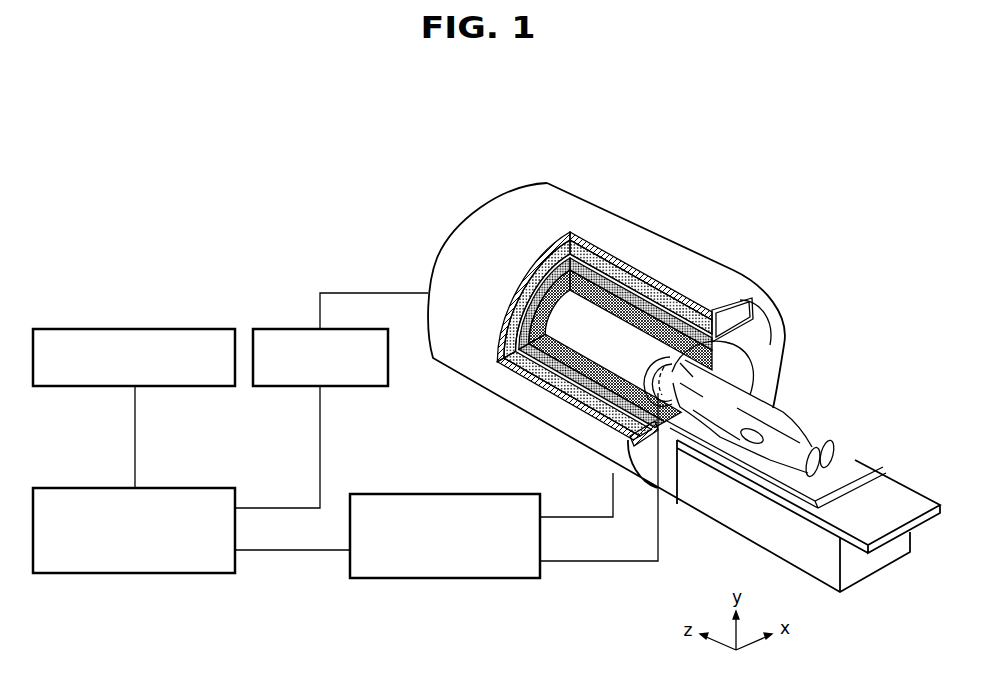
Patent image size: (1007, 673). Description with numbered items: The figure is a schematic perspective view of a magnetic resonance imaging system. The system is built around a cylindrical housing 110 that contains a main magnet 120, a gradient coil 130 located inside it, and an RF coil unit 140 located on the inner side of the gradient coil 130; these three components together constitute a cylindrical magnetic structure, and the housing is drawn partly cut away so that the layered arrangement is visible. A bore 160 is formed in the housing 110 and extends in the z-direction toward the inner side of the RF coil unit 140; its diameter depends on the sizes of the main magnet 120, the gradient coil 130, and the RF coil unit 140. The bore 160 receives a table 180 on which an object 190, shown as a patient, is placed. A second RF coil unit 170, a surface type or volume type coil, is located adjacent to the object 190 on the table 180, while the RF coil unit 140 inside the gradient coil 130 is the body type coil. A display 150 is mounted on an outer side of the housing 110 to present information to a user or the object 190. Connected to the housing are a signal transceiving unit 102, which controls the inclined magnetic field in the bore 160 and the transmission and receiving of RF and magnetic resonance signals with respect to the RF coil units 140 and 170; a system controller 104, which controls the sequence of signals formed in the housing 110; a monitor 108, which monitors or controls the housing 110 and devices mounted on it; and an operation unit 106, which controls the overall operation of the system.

The signal transceiving unit 102 is at (446, 494).
The system controller 104 is at (172, 488).
The operation unit 106 is at (172, 329).
The monitor 108 is at (293, 329).
The housing 110 is at (553, 202).
The main magnet 120 is at (577, 242).
The gradient coil 130 is at (608, 262).
The RF coil unit 140 is at (633, 267).
The display 150 is at (758, 313).
The bore 160 is at (730, 358).
The RF coil unit 170 is at (714, 297).
The table 180 is at (882, 485).
The object 190 is at (783, 427).